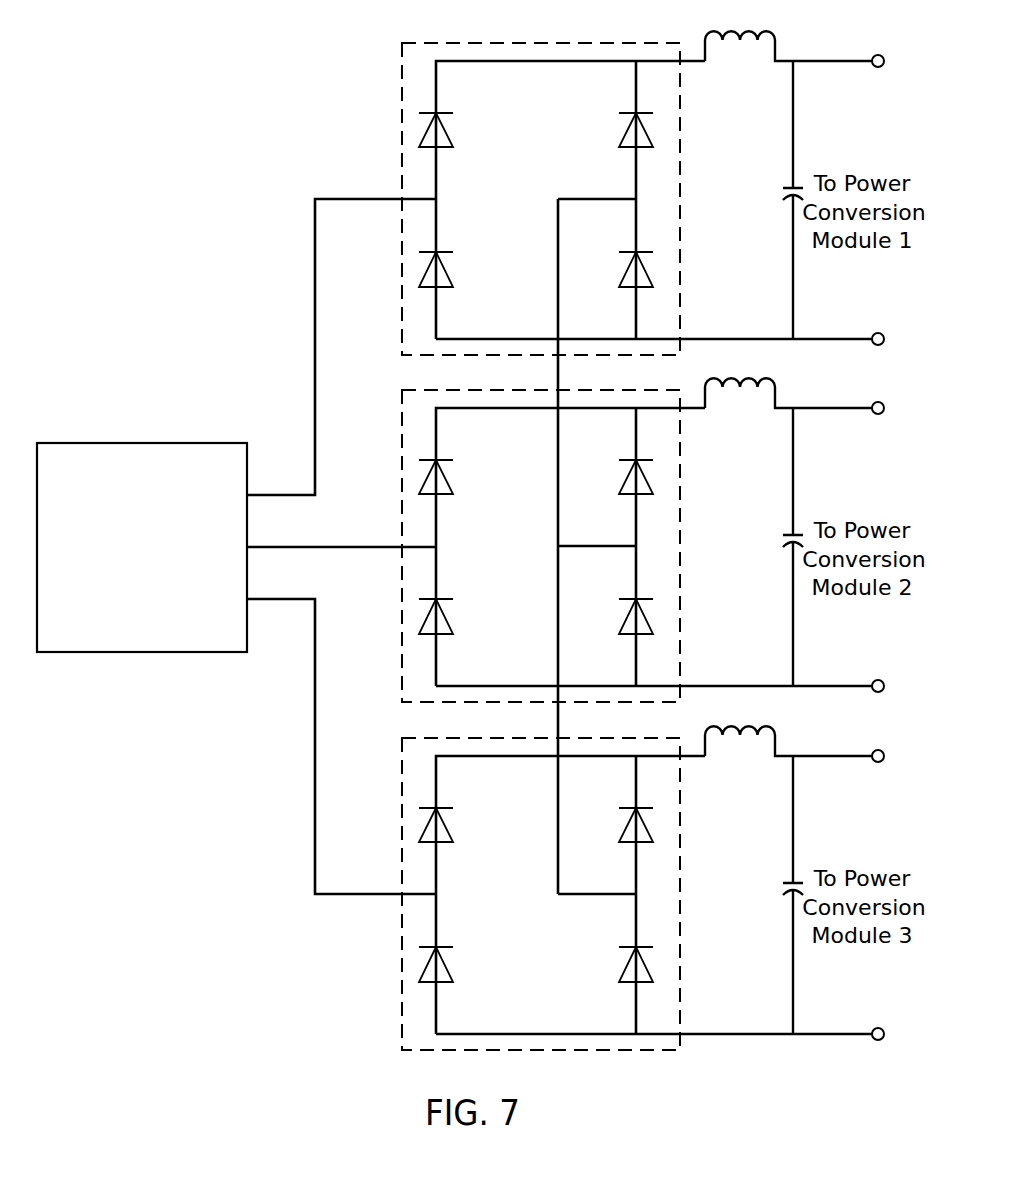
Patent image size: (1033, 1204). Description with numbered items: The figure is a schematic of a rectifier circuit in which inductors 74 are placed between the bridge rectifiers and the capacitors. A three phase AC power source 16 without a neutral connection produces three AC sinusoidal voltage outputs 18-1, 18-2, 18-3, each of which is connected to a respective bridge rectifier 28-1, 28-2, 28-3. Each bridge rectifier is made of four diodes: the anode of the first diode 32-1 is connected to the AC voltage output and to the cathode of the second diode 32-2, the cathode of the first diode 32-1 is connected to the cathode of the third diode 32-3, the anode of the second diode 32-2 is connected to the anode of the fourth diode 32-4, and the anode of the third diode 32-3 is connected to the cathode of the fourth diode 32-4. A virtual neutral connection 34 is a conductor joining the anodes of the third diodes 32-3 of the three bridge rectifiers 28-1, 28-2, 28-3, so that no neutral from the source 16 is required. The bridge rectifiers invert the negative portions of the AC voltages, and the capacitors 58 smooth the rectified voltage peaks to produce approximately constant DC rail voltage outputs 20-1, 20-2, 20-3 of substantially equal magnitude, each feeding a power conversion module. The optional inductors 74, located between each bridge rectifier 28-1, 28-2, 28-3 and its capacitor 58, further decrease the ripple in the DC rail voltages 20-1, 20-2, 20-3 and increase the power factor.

The three phase AC power source 16 is at (88, 443).
The AC sinusoidal voltage output 18-1 is at (315, 340).
The AC sinusoidal voltage output 18-2 is at (335, 547).
The AC sinusoidal voltage output 18-3 is at (315, 705).
The bridge rectifier 28-1 is at (470, 43).
The bridge rectifier 28-2 is at (415, 390).
The bridge rectifier 28-3 is at (416, 738).
The first diode 32-1 is at (446, 130).
The second diode 32-2 is at (446, 269).
The third diode 32-3 is at (627, 131).
The fourth diode 32-4 is at (627, 270).
The virtual neutral connection 34 is at (558, 507).
The inductor 74 is at (764, 33).
The capacitor 58 is at (790, 187).
The DC rail voltage output 20-1 is at (835, 63).
The DC rail voltage output 20-2 is at (835, 410).
The DC rail voltage output 20-3 is at (835, 758).